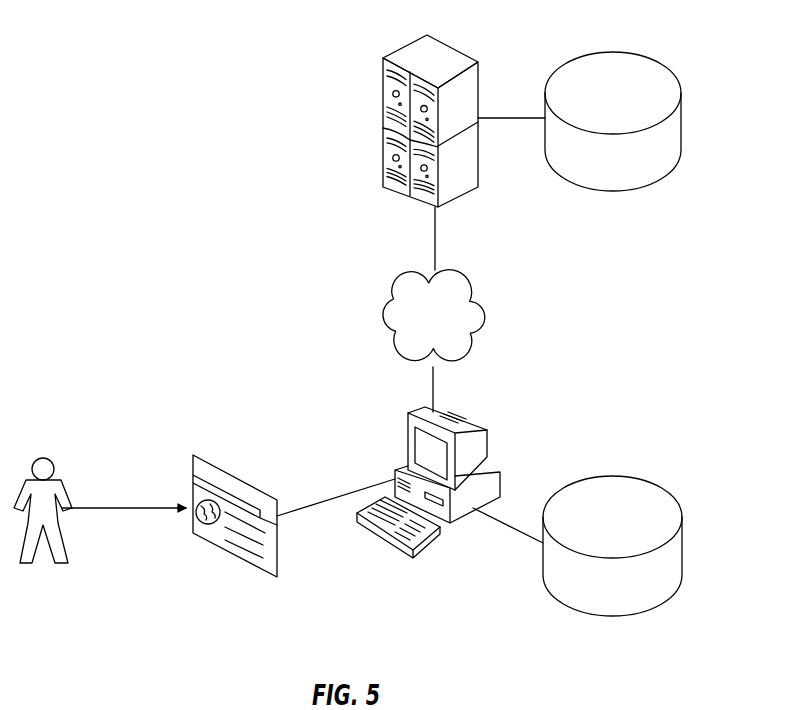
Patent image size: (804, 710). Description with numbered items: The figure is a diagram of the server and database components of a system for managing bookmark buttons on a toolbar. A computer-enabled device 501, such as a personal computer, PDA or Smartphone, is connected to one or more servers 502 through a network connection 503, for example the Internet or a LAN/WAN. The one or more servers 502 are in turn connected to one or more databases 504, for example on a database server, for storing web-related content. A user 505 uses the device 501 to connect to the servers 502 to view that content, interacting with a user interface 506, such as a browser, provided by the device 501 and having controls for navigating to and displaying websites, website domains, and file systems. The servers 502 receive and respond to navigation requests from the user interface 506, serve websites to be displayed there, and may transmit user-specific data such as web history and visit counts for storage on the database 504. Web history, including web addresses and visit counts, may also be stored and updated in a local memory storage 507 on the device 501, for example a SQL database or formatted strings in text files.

The computer-enabled device 501 is at (487, 447).
The server 502 is at (383, 88).
The network connection 503 is at (502, 317).
The database 504 is at (615, 52).
The user 505 is at (43, 458).
The user interface 506 is at (193, 463).
The local memory storage 507 is at (612, 477).